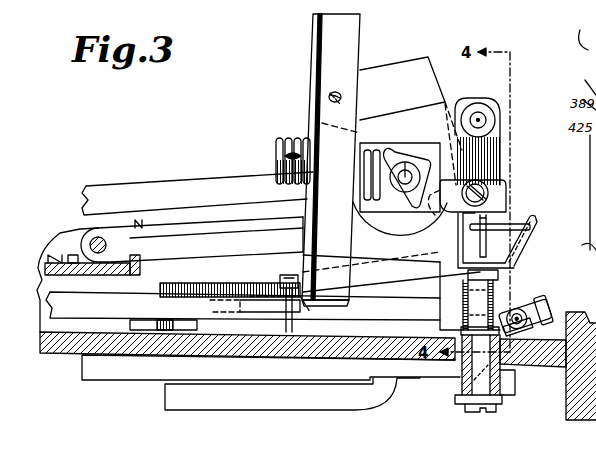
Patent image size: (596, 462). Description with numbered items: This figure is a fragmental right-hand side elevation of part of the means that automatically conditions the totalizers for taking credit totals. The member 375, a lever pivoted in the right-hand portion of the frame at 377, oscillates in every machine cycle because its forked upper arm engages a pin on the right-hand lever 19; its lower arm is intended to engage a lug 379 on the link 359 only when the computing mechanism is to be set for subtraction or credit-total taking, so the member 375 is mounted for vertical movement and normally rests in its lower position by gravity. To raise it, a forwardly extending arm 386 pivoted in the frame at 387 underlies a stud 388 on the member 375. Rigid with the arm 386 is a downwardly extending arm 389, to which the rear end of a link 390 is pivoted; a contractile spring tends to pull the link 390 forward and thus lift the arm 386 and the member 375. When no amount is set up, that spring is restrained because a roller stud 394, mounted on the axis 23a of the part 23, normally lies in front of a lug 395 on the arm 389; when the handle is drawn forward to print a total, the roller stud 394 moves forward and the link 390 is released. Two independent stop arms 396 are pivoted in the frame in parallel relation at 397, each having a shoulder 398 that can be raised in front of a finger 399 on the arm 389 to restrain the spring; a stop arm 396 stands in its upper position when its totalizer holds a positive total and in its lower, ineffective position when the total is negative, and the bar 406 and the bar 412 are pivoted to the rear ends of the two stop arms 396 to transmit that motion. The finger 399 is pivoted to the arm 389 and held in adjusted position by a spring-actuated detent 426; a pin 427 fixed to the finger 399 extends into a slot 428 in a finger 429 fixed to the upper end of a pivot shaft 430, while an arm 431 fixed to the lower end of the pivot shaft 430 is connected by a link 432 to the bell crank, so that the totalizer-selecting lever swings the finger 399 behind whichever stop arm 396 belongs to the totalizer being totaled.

The vertical bar 375 is at (352, 36).
The plate 19 is at (428, 64).
The lever 23 is at (190, 182).
The lever pivot bracket 23a is at (425, 152).
The spring 388 is at (322, 112).
The pin 386 is at (428, 108).
The pivot stud 387 is at (478, 118).
The housing 389 is at (496, 156).
The screw 426 is at (505, 190).
The arm 428 is at (518, 218).
The cam roller 394 is at (425, 205).
The cam arc 395 is at (440, 216).
The rack bar 390 is at (145, 300).
The link 399 is at (445, 270).
The arm 396 is at (218, 240).
The pivot 397 is at (108, 244).
The rod 379 is at (258, 302).
The stud 377 is at (290, 276).
The bracket 427 is at (517, 245).
The bracket base 429 is at (512, 262).
The bolt head 398 is at (497, 276).
The bolt 430 is at (483, 293).
The nut 431 is at (508, 392).
The roller 412 is at (548, 308).
The roller support 406 is at (528, 334).
The plate 359 is at (200, 364).
The bracket plate 432 is at (165, 396).